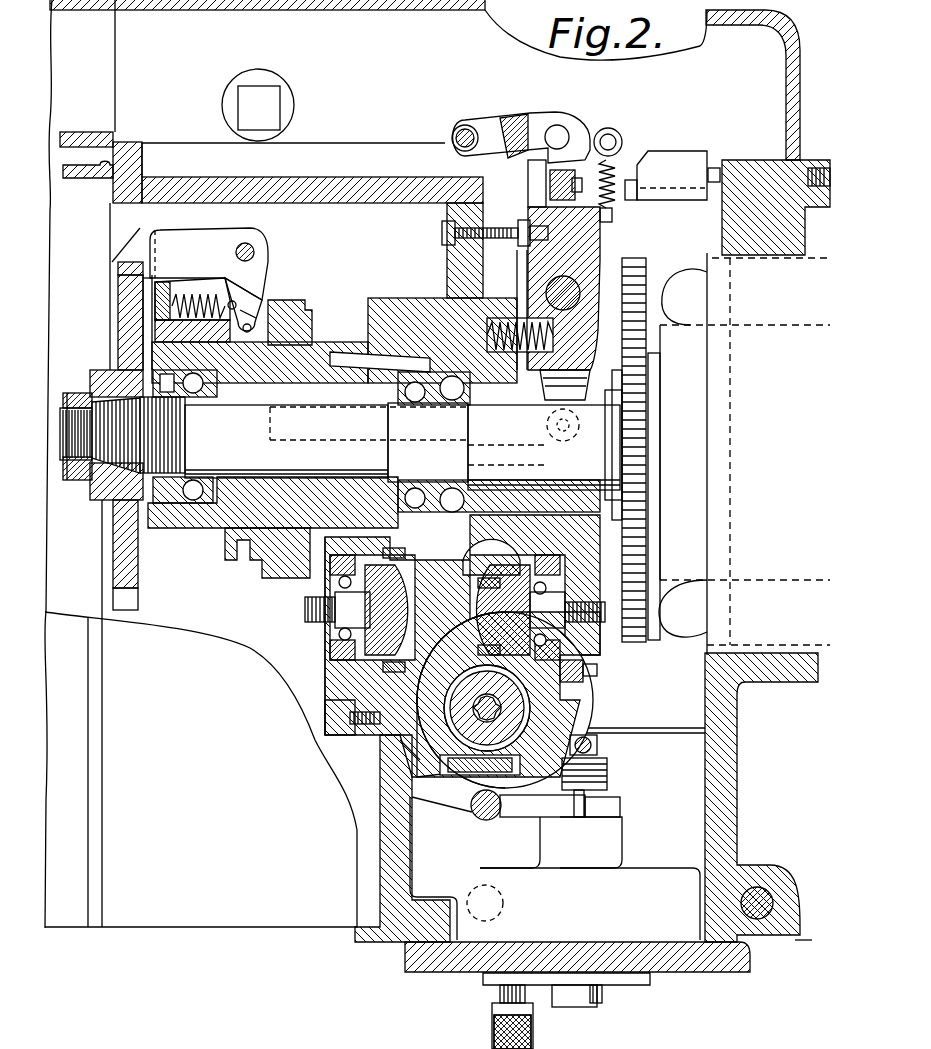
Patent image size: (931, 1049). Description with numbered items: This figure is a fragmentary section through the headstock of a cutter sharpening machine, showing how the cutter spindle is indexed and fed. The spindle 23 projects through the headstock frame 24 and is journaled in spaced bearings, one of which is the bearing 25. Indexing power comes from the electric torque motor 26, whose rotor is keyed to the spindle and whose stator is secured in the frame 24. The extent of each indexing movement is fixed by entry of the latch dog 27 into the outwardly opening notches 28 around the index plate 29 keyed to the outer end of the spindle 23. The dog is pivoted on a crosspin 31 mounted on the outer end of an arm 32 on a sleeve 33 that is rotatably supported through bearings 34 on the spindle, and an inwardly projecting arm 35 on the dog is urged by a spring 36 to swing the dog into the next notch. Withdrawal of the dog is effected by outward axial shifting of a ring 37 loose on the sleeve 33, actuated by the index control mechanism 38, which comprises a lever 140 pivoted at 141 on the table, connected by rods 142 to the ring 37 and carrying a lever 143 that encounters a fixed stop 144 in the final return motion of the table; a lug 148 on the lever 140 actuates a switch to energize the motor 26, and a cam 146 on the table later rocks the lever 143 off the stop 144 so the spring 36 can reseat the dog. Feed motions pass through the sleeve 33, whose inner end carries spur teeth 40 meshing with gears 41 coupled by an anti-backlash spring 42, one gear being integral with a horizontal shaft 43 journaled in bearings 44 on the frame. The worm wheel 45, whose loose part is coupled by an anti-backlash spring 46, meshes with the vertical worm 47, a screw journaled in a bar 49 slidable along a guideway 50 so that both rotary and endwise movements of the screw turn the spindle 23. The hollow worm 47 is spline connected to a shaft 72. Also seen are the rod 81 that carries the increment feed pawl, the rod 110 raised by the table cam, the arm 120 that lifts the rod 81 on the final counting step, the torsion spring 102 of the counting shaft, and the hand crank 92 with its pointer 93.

The spindle 23 is at (588, 478).
The headstock frame 24 is at (753, 170).
The bearing 25 is at (452, 400).
The electric torque motor 26 is at (704, 268).
The latch dog 27 is at (132, 243).
The notches 28 is at (128, 281).
The index plate 29 is at (128, 306).
The crosspin 31 is at (252, 250).
The arm 32 is at (262, 290).
The sleeve 33 is at (183, 520).
The bearings 34 is at (193, 393).
The inwardly projecting arm 35 is at (252, 302).
The spring 36 is at (175, 314).
The ring 37 is at (310, 312).
The index control mechanism 38 is at (639, 124).
The spur teeth 40 is at (358, 358).
The gears 41 is at (405, 555).
The anti-backlash spring 42 is at (365, 665).
The horizontal shaft 43 is at (325, 603).
The bearings 44 is at (540, 578).
The worm wheel 45 is at (485, 548).
The anti-backlash spring 46 is at (478, 580).
The worm 47 is at (460, 684).
The bar 49 is at (400, 740).
The guideway 50 is at (596, 712).
The shaft 72 is at (580, 692).
The rod 81 is at (488, 822).
The hand crank 92 is at (500, 990).
The pointer 93 is at (635, 986).
The torsion spring 102 is at (607, 775).
The rod 110 is at (470, 888).
The arm 120 is at (530, 806).
The lever 140 is at (598, 233).
The pivot 141 is at (590, 262).
The rods 142 is at (523, 434).
The lever 143 is at (518, 130).
The fixed stop 144 is at (280, 102).
The cam 146 is at (683, 163).
The lug 148 is at (533, 194).